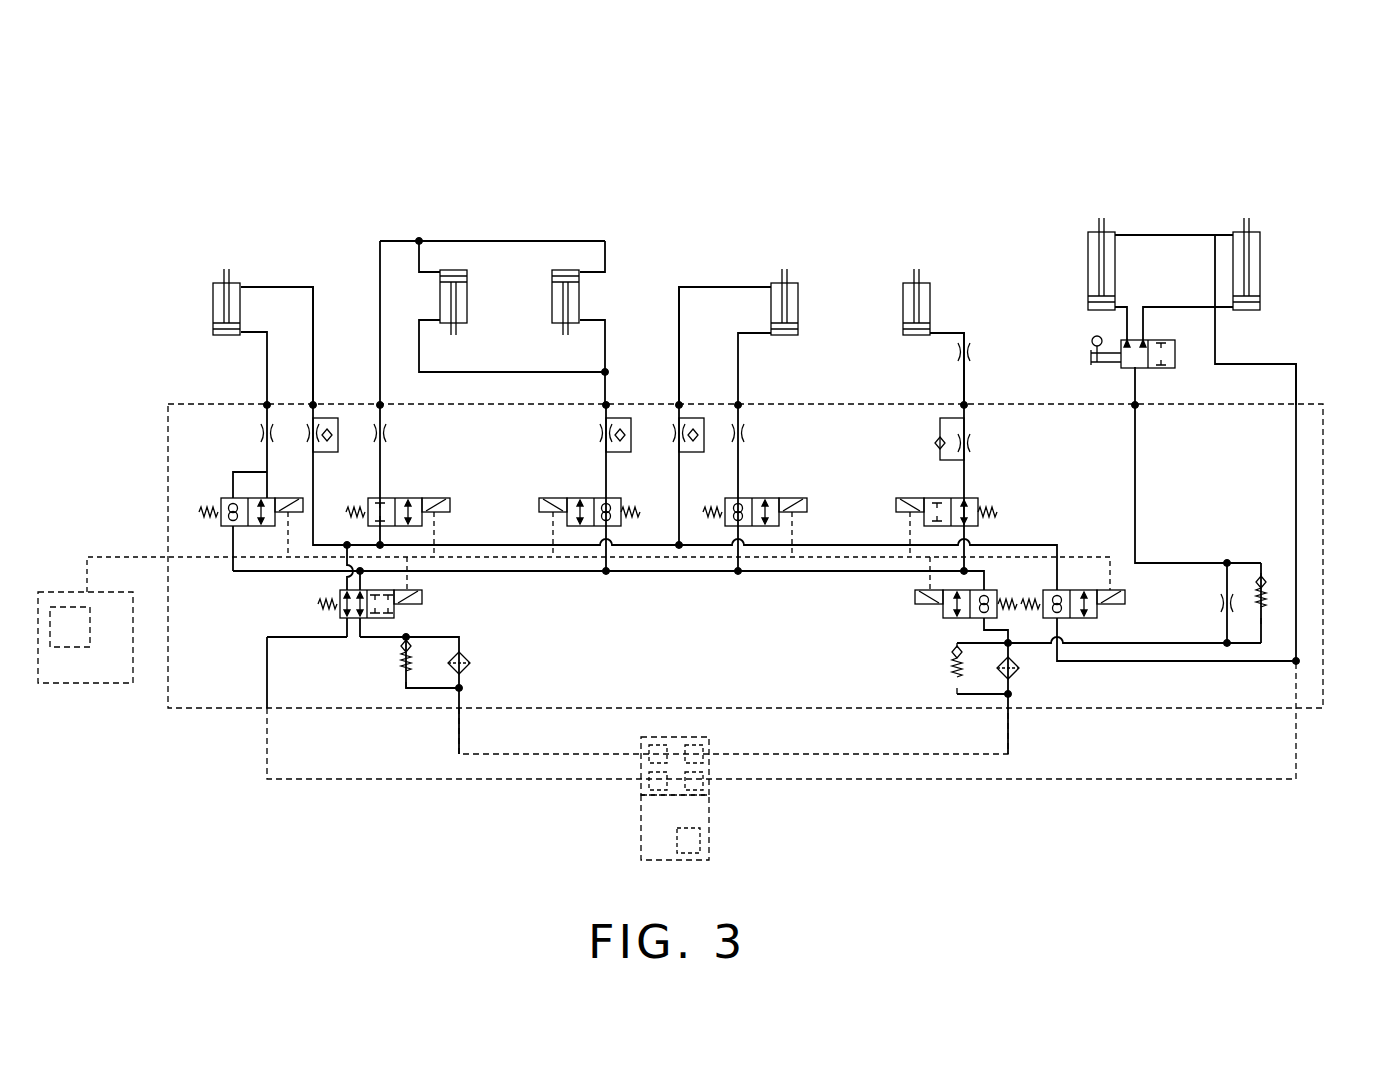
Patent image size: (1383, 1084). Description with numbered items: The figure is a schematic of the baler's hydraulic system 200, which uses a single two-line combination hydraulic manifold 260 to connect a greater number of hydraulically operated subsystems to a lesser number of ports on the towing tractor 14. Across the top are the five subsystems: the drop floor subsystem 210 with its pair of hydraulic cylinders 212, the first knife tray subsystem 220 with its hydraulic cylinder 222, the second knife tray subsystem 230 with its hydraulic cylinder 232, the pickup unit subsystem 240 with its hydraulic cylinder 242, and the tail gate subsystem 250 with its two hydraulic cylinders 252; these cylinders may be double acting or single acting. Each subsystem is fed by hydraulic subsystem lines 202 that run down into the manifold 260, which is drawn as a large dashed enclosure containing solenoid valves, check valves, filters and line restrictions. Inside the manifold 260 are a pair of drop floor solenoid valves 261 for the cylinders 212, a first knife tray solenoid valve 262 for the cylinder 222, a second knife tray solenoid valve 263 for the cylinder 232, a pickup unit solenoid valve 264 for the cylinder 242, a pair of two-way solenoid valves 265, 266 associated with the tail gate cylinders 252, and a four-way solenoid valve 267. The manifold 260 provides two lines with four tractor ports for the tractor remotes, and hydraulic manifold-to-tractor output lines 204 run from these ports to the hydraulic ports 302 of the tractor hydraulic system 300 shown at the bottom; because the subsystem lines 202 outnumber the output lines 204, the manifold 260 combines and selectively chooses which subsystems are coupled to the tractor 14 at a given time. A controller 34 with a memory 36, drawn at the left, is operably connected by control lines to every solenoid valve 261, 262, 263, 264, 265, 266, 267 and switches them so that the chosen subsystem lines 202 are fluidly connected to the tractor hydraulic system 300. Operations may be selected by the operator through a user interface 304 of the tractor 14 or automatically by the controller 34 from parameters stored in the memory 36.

The tractor 14 is at (687, 837).
The controller 34 is at (90, 683).
The memory 36 is at (60, 607).
The hydraulic system 200 is at (1022, 130).
The hydraulic subsystem lines 202 is at (380, 298).
The tractor output lines 204 is at (457, 779).
The drop floor subsystem 210 is at (542, 263).
The hydraulic cylinders 212 is at (455, 283).
The first knife tray subsystem 220 is at (218, 249).
The hydraulic cylinder 222 is at (213, 283).
The second knife tray subsystem 230 is at (830, 240).
The hydraulic cylinder 232 is at (800, 290).
The pickup unit subsystem 240 is at (974, 252).
The hydraulic cylinder 242 is at (932, 298).
The tail gate subsystem 250 is at (1200, 213).
The hydraulic cylinders 252 is at (1088, 245).
The hydraulic manifold 260 is at (1325, 455).
The drop floor solenoid valves 261 is at (531, 484).
The first knife tray solenoid valve 262 is at (225, 488).
The second knife tray solenoid valve 263 is at (793, 486).
The pickup unit solenoid valve 264 is at (988, 487).
The two-way solenoid valve 265 is at (932, 612).
The two-way solenoid valve 266 is at (1119, 619).
The four-way solenoid valve 267 is at (322, 615).
The hydraulic system of the tractor 300 is at (732, 757).
The hydraulic ports 302 is at (653, 745).
The user interface 304 is at (700, 842).